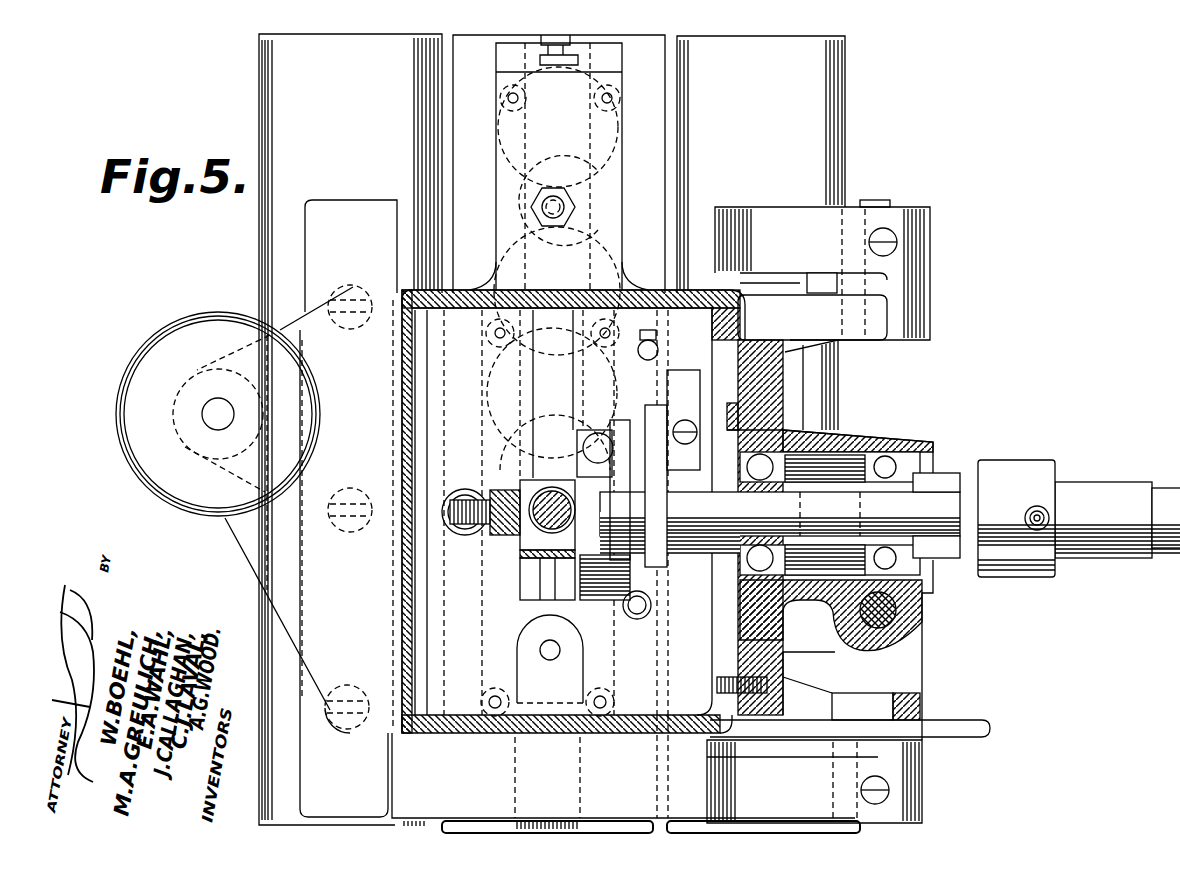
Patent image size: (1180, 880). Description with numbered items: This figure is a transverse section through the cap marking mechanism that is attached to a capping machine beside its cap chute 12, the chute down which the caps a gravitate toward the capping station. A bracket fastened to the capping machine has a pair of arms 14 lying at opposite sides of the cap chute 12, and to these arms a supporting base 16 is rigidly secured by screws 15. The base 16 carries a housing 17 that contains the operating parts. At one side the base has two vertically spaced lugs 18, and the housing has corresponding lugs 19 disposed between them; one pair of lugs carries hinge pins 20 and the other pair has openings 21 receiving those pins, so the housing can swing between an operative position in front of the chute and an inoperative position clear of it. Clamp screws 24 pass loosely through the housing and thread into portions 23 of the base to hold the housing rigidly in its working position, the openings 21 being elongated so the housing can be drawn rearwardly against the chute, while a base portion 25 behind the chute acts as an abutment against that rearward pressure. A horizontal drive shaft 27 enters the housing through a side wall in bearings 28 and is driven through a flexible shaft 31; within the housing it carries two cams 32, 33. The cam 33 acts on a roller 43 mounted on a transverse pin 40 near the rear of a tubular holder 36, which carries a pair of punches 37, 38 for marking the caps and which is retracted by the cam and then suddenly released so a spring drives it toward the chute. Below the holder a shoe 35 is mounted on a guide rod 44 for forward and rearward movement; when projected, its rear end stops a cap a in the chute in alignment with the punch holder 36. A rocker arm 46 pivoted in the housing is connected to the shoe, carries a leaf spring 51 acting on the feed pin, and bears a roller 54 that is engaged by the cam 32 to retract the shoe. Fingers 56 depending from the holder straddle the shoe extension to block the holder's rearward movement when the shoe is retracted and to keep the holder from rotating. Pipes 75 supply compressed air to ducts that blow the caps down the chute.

The cap chute 12 is at (458, 170).
The arms 14 is at (552, 429).
The screws 15 is at (352, 290).
The supporting base 16 is at (300, 731).
The housing 17 is at (540, 725).
The lugs 18 is at (932, 243).
The lugs 19 is at (930, 333).
The hinge pins 20 is at (888, 205).
The openings 21 is at (932, 290).
The portions of the base 23 is at (900, 618).
The clamp screws 24 is at (302, 444).
The base portion 25 is at (626, 774).
The drive shaft 27 is at (828, 522).
The bearings 28 is at (890, 445).
The flexible shaft 31 is at (1165, 556).
The cam 32 is at (652, 605).
The cam 33 is at (620, 612).
The shoe 35 is at (520, 615).
The tubular holder 36 is at (525, 480).
The punch 37 is at (520, 555).
The punch 38 is at (550, 485).
The transverse pin 40 is at (495, 495).
The roller 43 is at (605, 510).
The guide rod 44 is at (550, 660).
The rocker arm 46 is at (655, 375).
The leaf spring 51 is at (598, 432).
The roller 54 is at (656, 412).
The fingers 56 is at (520, 590).
The pipes 75 is at (553, 220).
The cap a is at (604, 205).